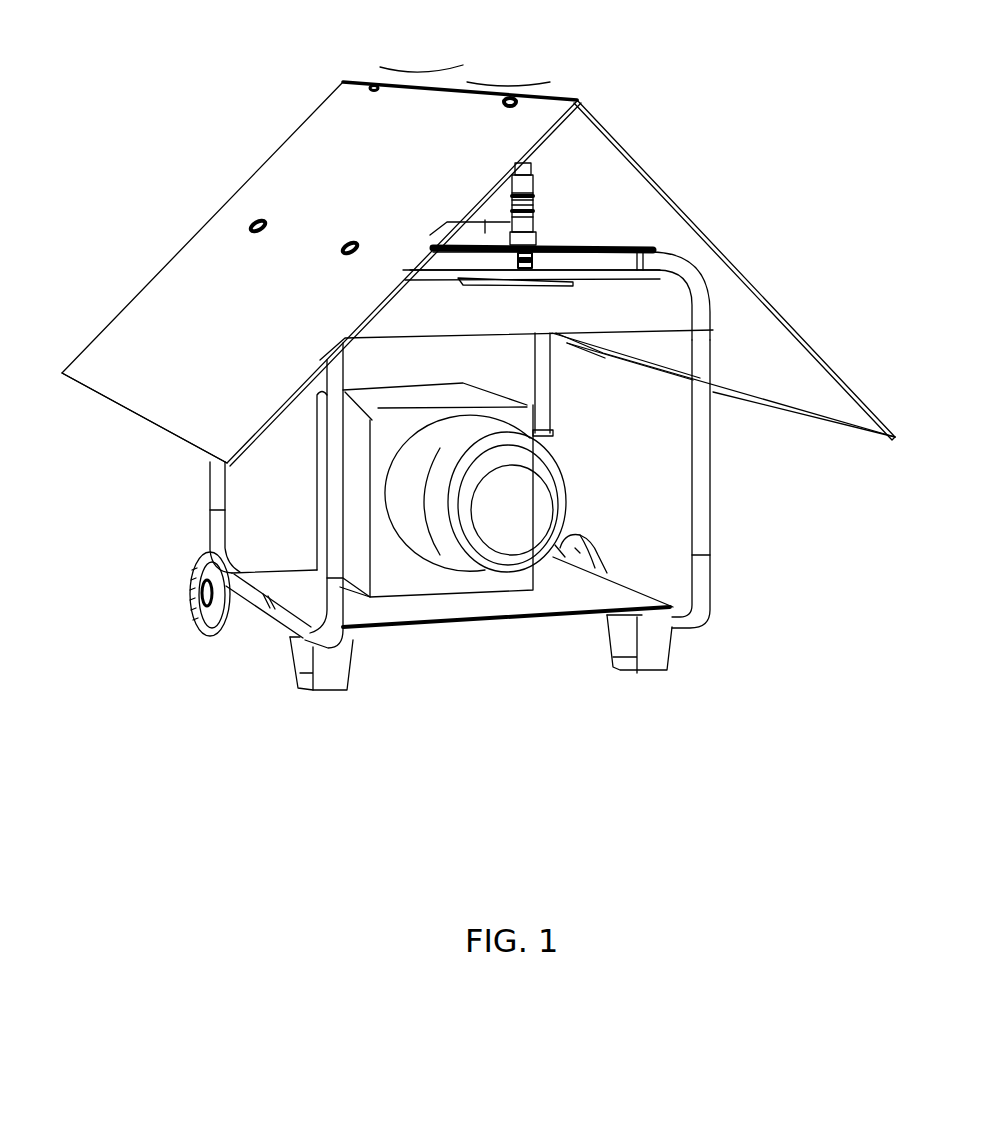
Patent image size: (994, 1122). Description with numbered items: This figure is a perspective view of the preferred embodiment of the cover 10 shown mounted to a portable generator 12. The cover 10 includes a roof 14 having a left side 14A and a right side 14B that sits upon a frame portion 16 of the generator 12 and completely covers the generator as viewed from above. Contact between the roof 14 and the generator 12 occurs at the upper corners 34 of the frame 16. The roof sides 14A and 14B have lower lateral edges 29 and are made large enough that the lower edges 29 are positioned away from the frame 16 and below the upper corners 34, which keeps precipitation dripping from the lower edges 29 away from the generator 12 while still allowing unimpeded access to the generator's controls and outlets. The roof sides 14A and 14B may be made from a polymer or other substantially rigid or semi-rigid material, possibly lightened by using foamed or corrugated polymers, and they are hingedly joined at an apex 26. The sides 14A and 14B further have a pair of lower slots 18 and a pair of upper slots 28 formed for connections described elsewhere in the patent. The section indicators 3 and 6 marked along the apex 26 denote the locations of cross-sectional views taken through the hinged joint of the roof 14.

The cover 10 is at (152, 163).
The generator 12 is at (518, 702).
The roof 14 is at (240, 349).
The left side 14A is at (142, 320).
The right side 14B is at (790, 323).
The frame portion 16 is at (713, 545).
The lower slots 18 is at (272, 228).
The apex 26 is at (363, 82).
The upper slots 28 is at (375, 90).
The lower lateral edges 29 is at (138, 418).
The upper corners 34 is at (692, 277).
The section line 3- 3 is at (508, 69).
The section line 6- 6 is at (415, 57).